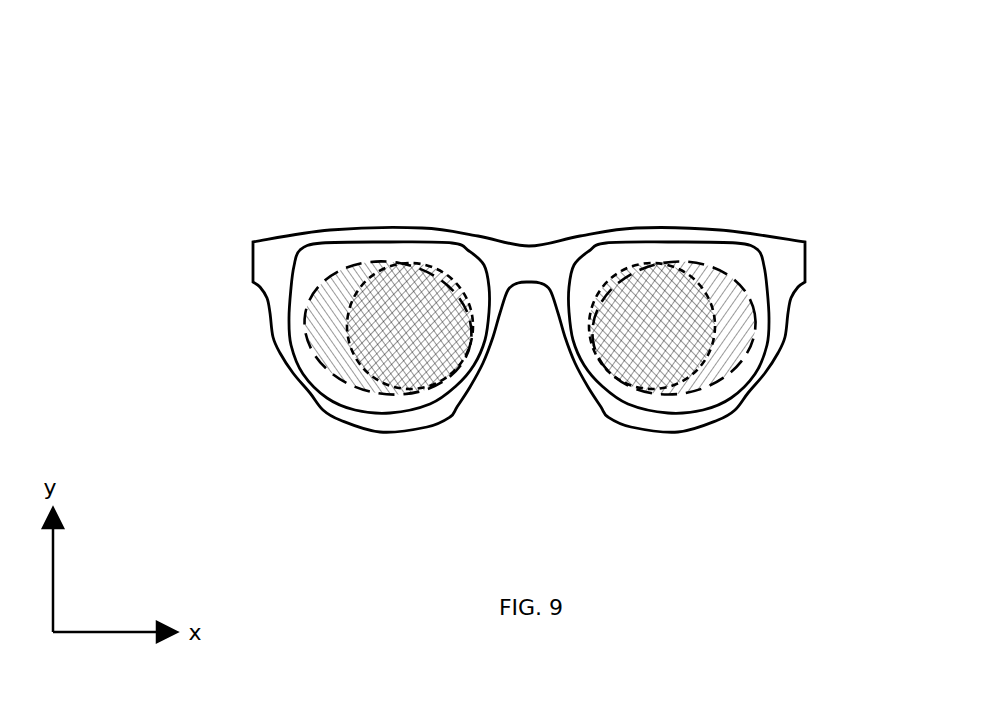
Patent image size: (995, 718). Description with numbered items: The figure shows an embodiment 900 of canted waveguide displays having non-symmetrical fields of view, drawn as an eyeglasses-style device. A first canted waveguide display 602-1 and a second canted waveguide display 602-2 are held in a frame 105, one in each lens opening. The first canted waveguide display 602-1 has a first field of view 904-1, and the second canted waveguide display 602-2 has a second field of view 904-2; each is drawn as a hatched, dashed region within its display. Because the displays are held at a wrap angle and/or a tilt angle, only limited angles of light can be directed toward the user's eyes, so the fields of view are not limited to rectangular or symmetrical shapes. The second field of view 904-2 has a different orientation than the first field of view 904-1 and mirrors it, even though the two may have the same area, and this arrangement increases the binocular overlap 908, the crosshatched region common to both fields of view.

The display system (eyeglasses) 900 is at (857, 111).
The frame 105 is at (398, 242).
The first canted waveguide display 602-1 is at (693, 256).
The second canted waveguide display 602-2 is at (345, 258).
The first field of view 904-1 is at (721, 368).
The second field of view 904-2 is at (348, 377).
The binocular overlap 908 is at (432, 375).